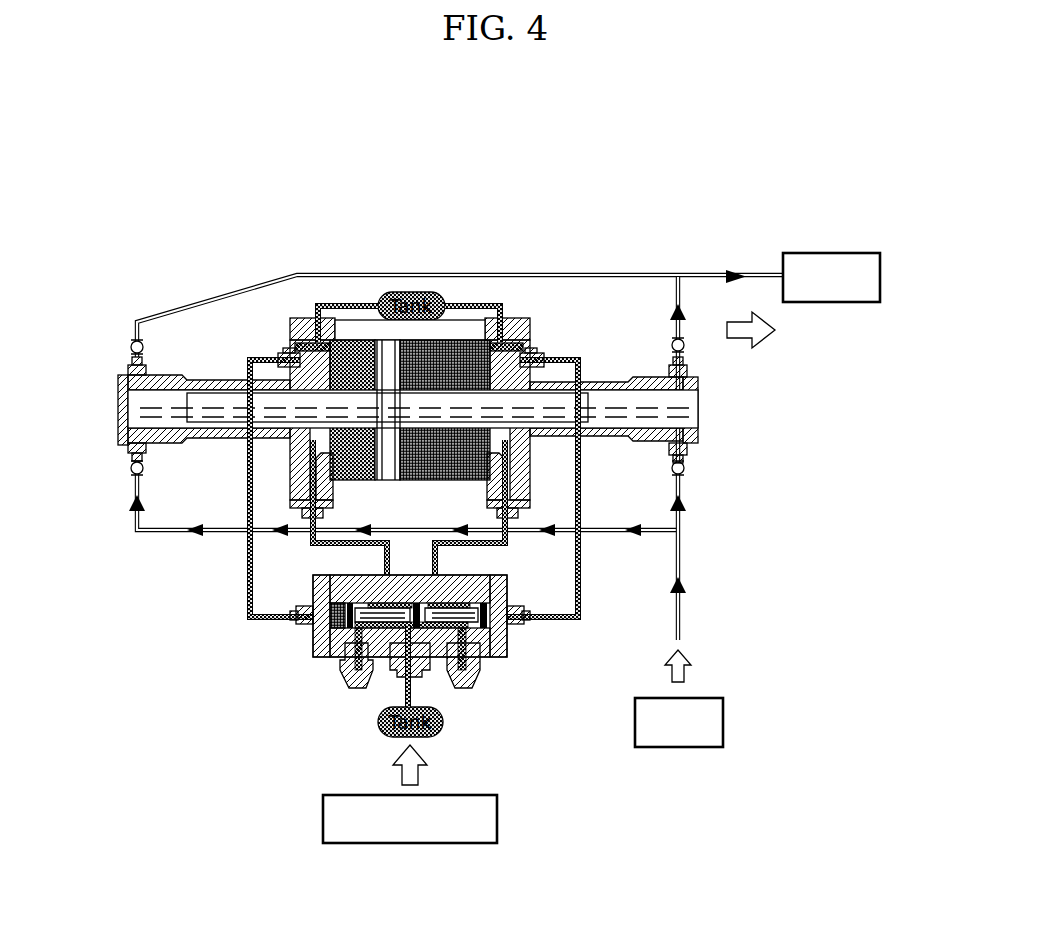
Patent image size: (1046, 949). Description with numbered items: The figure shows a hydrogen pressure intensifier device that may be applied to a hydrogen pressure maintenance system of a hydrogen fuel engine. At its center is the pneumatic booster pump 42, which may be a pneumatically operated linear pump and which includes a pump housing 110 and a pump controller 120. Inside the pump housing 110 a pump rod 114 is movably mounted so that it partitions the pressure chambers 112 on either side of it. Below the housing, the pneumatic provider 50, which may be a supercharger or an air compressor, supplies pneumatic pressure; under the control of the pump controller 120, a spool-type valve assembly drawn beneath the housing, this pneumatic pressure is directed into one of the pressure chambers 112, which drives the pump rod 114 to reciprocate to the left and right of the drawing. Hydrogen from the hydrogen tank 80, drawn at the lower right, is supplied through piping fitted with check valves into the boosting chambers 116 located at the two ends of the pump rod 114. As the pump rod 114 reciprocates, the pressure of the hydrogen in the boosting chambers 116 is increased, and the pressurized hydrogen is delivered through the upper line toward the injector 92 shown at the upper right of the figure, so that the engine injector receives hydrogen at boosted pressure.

The pneumatic booster pump 42 is at (543, 333).
The pneumatic provider 50 is at (497, 820).
The hydrogen tank 80 is at (723, 724).
The injector 92 is at (831, 253).
The pump housing 110 is at (293, 470).
The pressure chambers 112 is at (459, 353).
The pump rod 114 is at (210, 405).
The boosting chambers 116 is at (672, 408).
The pump controller 120 is at (330, 657).